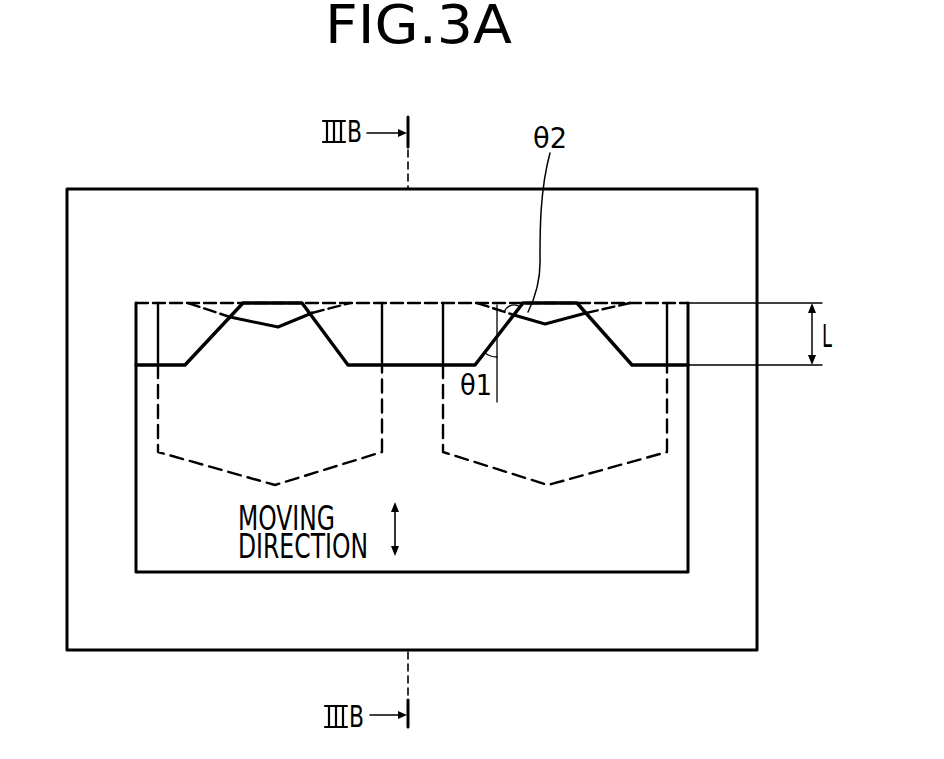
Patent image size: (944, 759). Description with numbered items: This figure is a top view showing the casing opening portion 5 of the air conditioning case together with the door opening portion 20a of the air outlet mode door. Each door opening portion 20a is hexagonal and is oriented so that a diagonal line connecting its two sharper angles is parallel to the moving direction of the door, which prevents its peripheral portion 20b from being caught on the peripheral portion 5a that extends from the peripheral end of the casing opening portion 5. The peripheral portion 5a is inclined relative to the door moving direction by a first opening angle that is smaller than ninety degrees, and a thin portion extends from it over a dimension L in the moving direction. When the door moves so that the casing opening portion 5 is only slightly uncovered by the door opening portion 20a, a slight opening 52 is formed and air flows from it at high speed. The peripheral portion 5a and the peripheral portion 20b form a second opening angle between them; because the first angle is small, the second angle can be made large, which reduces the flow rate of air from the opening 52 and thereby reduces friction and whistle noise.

The casing opening portion 5 is at (643, 523).
The peripheral portion 5a is at (595, 313).
The opening 52 is at (277, 319).
The door opening portion 20a is at (258, 315).
The peripheral portion 20b is at (293, 322).